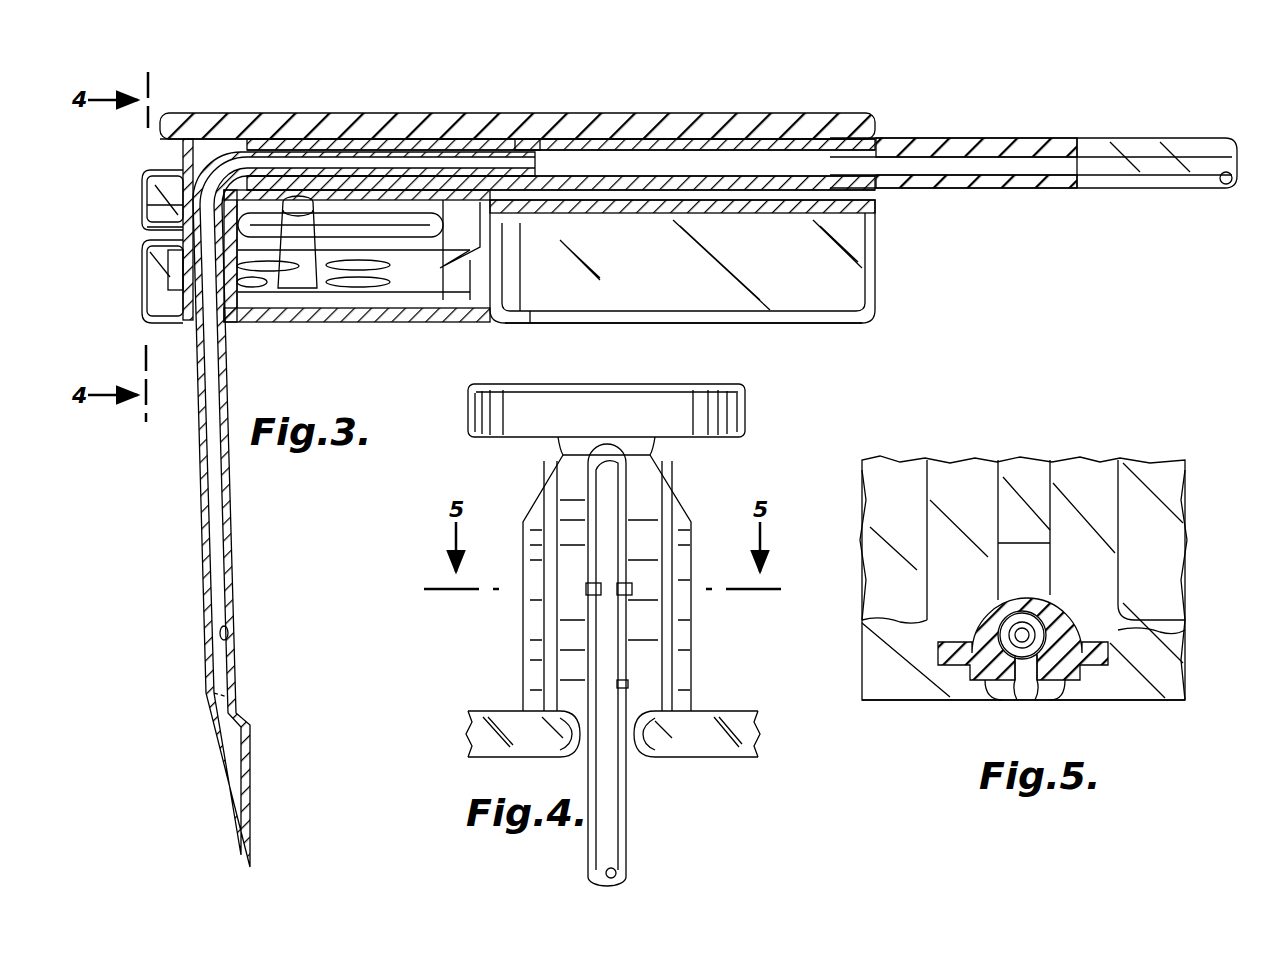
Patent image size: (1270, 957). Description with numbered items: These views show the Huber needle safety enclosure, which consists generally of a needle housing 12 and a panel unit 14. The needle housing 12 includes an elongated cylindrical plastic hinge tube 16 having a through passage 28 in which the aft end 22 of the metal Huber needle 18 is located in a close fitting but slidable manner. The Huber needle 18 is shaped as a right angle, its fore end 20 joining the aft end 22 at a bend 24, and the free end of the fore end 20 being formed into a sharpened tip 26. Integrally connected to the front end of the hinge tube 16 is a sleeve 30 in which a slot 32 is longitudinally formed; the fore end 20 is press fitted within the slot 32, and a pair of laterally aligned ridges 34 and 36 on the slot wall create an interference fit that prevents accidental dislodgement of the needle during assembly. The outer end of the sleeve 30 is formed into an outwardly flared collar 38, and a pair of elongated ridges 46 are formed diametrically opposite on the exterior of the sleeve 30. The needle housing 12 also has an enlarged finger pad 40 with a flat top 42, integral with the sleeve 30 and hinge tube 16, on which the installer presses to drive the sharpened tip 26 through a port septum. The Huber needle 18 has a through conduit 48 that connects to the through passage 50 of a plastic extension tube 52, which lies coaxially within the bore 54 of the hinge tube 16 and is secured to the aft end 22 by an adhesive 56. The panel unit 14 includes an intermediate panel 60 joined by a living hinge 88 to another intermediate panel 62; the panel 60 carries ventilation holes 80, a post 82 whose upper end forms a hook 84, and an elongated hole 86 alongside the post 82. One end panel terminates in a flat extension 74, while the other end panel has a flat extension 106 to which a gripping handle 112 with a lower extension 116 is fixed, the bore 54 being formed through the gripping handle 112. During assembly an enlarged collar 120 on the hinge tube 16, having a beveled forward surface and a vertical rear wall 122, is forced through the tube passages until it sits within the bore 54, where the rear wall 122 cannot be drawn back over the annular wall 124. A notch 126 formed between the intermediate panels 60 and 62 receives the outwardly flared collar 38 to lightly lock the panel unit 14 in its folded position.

In FIG. 3, the needle housing 12 is at (213, 110).
In FIG. 3, the panel unit 14 is at (880, 268).
In FIG. 3, the hinge tube 16 is at (515, 139).
In FIG. 3, the Huber needle 18 is at (203, 562).
In FIG. 3, the fore end 20 is at (230, 500).
In FIG. 4, the fore end 20 is at (628, 835).
In FIG. 5, the fore end 20 is at (1062, 603).
In FIG. 3, the aft end 22 is at (580, 160).
In FIG. 3, the bend 24 is at (183, 156).
In FIG. 4, the bend 24 is at (558, 455).
In FIG. 3, the sharpened tip 26 is at (250, 803).
In FIG. 3, the through passage 28 is at (470, 139).
In FIG. 3, the sleeve 30 is at (150, 178).
In FIG. 4, the sleeve 30 is at (560, 660).
In FIG. 5, the sleeve 30 is at (1185, 622).
In FIG. 3, the slot 32 is at (192, 265).
In FIG. 4, the slot 32 is at (628, 684).
In FIG. 3, the ridge 34 is at (150, 227).
In FIG. 4, the ridge 34 is at (586, 588).
In FIG. 5, the ridge 34 is at (1012, 690).
In FIG. 4, the ridge 36 is at (632, 590).
In FIG. 5, the ridge 36 is at (1037, 690).
In FIG. 3, the outwardly flared collar 38 is at (230, 322).
In FIG. 4, the outwardly flared collar 38 is at (560, 757).
In FIG. 3, the enlarged finger pad 40 is at (240, 113).
In FIG. 4, the enlarged finger pad 40 is at (745, 420).
In FIG. 3, the flat top 42 is at (195, 113).
In FIG. 4, the flat top 42 is at (697, 384).
In FIG. 4, the elongated ridges 46 is at (540, 510).
In FIG. 5, the elongated ridges 46 is at (950, 686).
In FIG. 3, the through conduit 48 is at (228, 630).
In FIG. 5, the through conduit 48 is at (862, 622).
In FIG. 3, the through passage 50 is at (1005, 138).
In FIG. 3, the extension tube 52 is at (1158, 138).
In FIG. 3, the bore 54 is at (712, 135).
In FIG. 3, the adhesive 56 is at (612, 176).
In FIG. 5, the intermediate panel 60 is at (962, 465).
In FIG. 5, the intermediate panel 62 is at (1087, 470).
In FIG. 3, the flat extension 74 is at (345, 113).
In FIG. 3, the ventilation holes 80 is at (440, 308).
In FIG. 3, the post 82 is at (300, 290).
In FIG. 3, the hook 84 is at (292, 200).
In FIG. 3, the elongated hole 86 is at (400, 288).
In FIG. 3, the living hinge 88 is at (372, 290).
In FIG. 5, the living hinge 88 is at (1035, 467).
In FIG. 3, the flat extension 106 is at (420, 113).
In FIG. 3, the gripping handle 112 is at (838, 122).
In FIG. 3, the lower extension 116 is at (830, 323).
In FIG. 3, the enlarged collar 120 is at (553, 213).
In FIG. 3, the vertical rear wall 122 is at (523, 213).
In FIG. 3, the annular wall 124 is at (528, 138).
In FIG. 3, the notch 126 is at (260, 322).